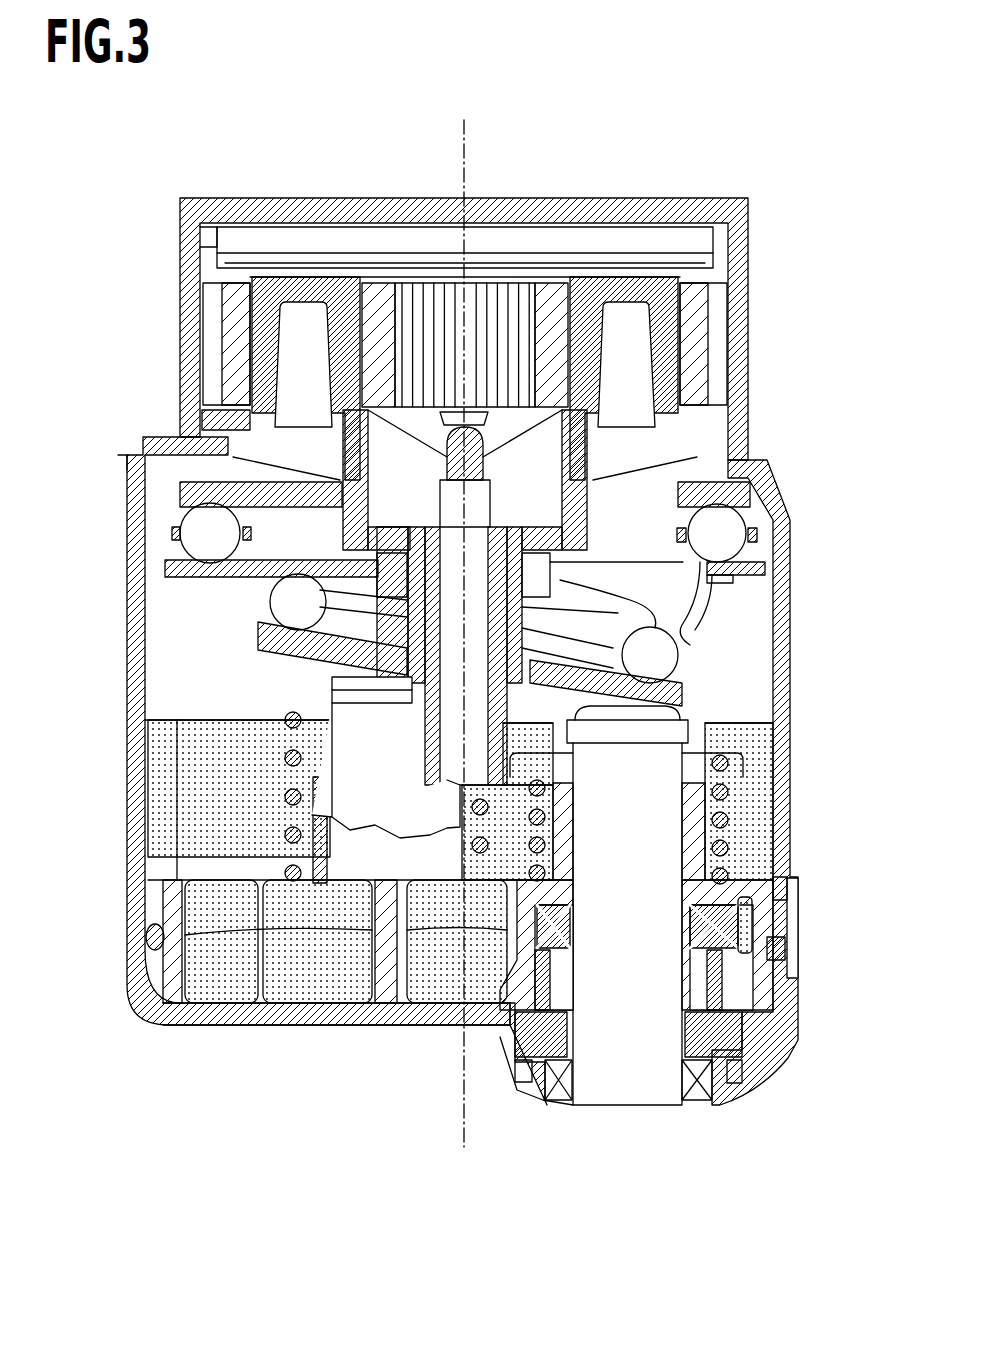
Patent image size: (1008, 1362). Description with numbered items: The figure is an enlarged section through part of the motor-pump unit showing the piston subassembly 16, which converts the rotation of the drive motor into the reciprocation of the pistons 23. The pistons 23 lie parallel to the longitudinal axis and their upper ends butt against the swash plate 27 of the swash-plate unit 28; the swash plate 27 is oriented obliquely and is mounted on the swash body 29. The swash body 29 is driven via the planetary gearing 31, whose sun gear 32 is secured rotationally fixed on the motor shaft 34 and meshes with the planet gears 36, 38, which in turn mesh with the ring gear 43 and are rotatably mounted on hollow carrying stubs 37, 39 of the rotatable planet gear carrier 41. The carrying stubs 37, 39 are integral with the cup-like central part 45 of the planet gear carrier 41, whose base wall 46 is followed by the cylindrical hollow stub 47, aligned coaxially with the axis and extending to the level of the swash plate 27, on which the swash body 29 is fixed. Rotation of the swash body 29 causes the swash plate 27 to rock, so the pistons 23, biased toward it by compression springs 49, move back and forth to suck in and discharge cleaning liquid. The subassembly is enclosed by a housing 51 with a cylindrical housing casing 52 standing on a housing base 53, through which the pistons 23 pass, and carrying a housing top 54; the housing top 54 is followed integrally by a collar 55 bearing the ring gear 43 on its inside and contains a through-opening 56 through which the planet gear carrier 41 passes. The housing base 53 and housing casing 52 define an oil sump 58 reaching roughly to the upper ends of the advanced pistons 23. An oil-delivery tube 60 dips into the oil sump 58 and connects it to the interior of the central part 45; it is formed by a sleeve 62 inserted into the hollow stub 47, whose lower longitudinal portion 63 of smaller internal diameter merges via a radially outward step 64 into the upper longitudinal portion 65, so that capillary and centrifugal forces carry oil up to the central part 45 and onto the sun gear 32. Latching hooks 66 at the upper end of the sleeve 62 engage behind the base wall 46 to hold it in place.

The piston subassembly 16 is at (473, 652).
The pistons 23 is at (645, 1095).
The swash plate 27 is at (687, 700).
The swash-plate unit 28 is at (245, 628).
The swash body 29 is at (690, 600).
The planetary gearing 31 is at (625, 260).
The sun gear 32 is at (555, 275).
The motor shaft 34 is at (478, 275).
The planet gear 36 is at (385, 300).
The carrying stub 37 is at (305, 290).
The planet gear 38 is at (700, 320).
The carrying stub 39 is at (700, 290).
The planet gear carrier 41 is at (592, 505).
The ring gear 43 is at (225, 270).
The cup-like central part 45 is at (578, 468).
The base wall 46 is at (385, 515).
The hollow stub 47 is at (335, 660).
The compression springs 49 is at (723, 791).
The housing 51 is at (812, 913).
The housing casing 52 is at (791, 835).
The housing base 53 is at (222, 1015).
The housing top 54 is at (190, 478).
The collar 55 is at (185, 285).
The through-opening 56 is at (195, 420).
The oil sump 58 is at (195, 863).
The oil-delivery tube 60 is at (420, 750).
The sleeve 62 is at (450, 790).
The lower longitudinal portion 63 is at (455, 803).
The step 64 is at (485, 583).
The upper longitudinal portion 65 is at (445, 545).
The latching hooks 66 is at (495, 545).